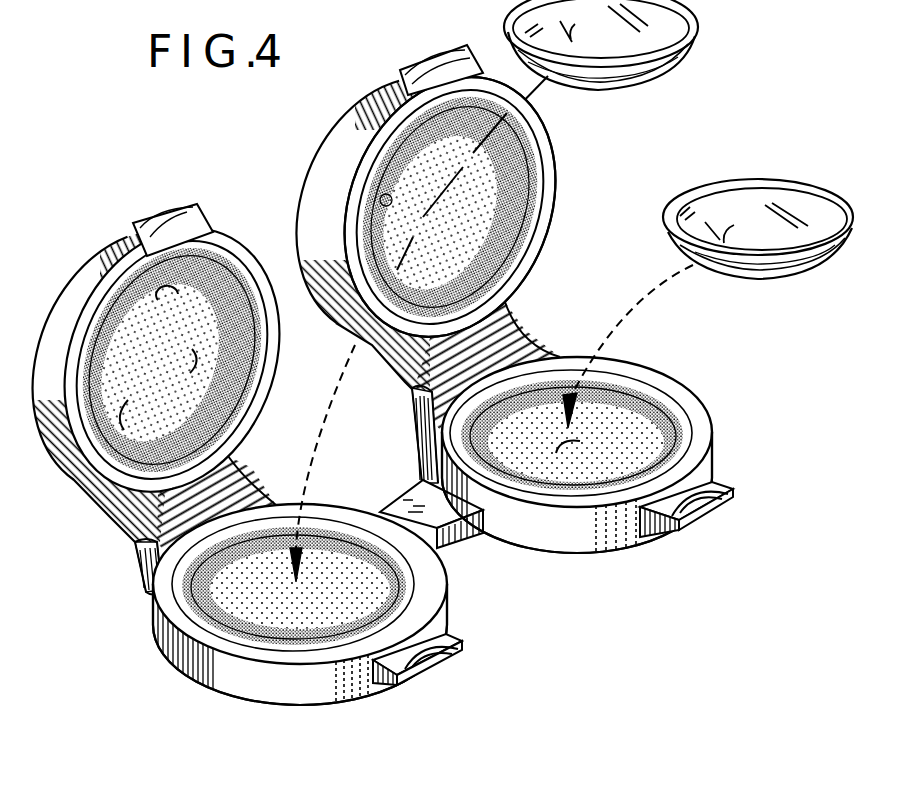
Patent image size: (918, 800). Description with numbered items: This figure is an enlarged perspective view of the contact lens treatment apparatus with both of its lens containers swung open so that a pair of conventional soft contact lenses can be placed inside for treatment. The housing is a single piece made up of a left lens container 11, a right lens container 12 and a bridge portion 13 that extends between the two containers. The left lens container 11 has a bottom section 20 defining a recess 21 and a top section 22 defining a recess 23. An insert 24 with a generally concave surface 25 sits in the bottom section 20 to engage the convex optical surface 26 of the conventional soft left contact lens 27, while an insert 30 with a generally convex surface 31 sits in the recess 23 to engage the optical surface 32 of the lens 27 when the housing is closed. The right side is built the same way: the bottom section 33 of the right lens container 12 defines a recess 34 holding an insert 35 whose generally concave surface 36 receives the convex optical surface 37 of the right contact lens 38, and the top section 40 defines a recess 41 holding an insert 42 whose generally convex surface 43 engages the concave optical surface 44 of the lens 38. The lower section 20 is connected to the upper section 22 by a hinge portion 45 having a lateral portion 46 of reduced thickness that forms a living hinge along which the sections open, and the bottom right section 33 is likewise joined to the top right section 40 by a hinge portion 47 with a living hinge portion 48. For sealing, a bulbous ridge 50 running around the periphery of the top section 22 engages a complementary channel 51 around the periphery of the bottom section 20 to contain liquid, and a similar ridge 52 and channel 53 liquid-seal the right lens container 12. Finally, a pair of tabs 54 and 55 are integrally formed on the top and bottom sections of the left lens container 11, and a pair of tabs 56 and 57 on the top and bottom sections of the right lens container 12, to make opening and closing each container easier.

The left lens container 11 is at (311, 688).
The right lens container 12 is at (601, 545).
The bridge portion 13 is at (428, 511).
The bottom section 20 is at (254, 697).
The recess 21 is at (220, 632).
The top section 22 is at (67, 477).
The recess 23 is at (160, 292).
The insert 24 is at (160, 642).
The concave surface 25 is at (305, 603).
The convex optical surface 26 is at (623, 88).
The left contact lens 27 is at (688, 52).
The insert 30 is at (124, 412).
The convex surface 31 is at (182, 371).
The optical surface 32 is at (601, 29).
The bottom section 33 is at (640, 537).
The recess 34 is at (680, 420).
The insert 35 is at (633, 410).
The concave surface 36 is at (576, 442).
The convex optical surface 37 is at (764, 283).
The right contact lens 38 is at (850, 234).
The top section 40 is at (327, 215).
The recess 41 is at (382, 195).
The insert 42 is at (505, 183).
The convex surface 43 is at (473, 261).
The concave optical surface 44 is at (762, 219).
The hinge portion 45 is at (150, 590).
The lateral portion 46 is at (143, 546).
The hinge portion 47 is at (414, 420).
The living hinge portion 48 is at (410, 392).
The bulbous ridge 50 is at (247, 428).
The channel 51 is at (443, 594).
The ridge 52 is at (531, 230).
The channel 53 is at (708, 437).
The tab 54 is at (127, 240).
The tab 55 is at (388, 692).
The tab 56 is at (431, 62).
The tab 57 is at (734, 488).